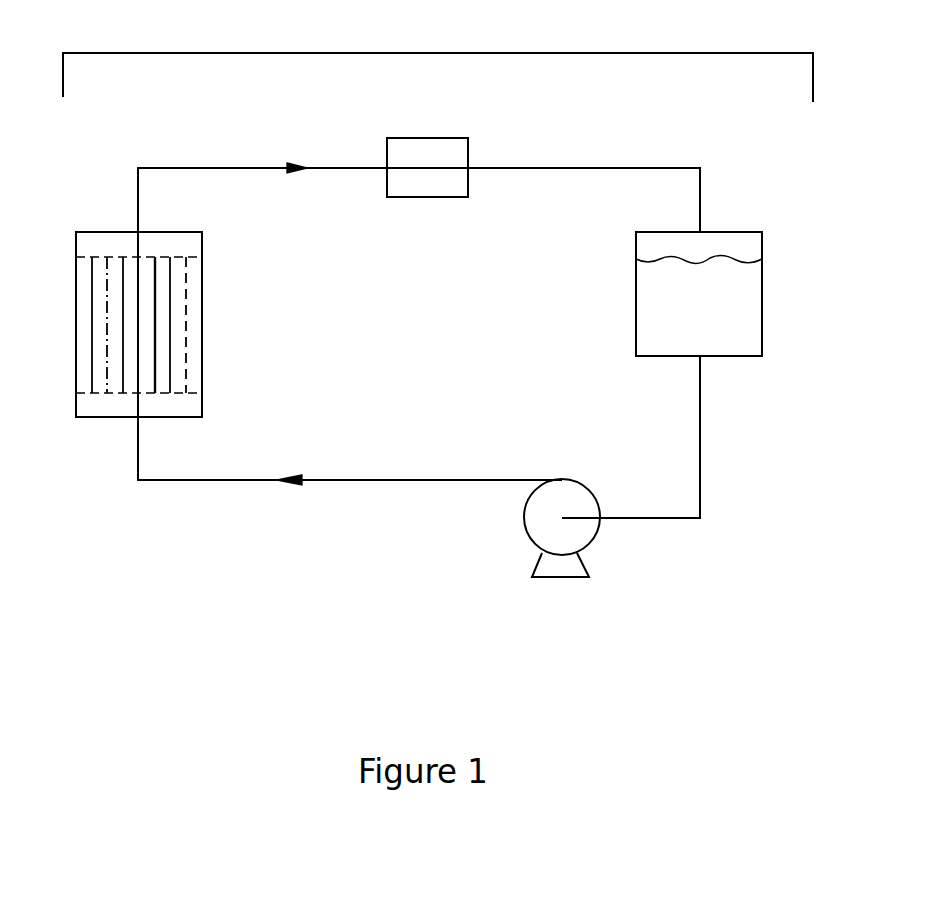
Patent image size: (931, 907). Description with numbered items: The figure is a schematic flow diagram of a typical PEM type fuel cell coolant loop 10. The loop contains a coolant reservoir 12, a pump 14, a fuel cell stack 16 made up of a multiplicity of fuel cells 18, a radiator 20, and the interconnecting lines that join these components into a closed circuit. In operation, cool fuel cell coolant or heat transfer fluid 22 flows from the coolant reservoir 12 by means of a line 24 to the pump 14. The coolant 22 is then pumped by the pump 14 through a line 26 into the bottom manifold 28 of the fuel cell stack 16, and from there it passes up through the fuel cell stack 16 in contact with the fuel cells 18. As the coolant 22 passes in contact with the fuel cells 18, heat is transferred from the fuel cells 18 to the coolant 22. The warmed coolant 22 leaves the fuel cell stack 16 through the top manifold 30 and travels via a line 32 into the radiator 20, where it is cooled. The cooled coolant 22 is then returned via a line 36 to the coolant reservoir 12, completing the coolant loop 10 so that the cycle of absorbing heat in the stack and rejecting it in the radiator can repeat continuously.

The fuel cell coolant loop 10 is at (438, 59).
The coolant reservoir 12 is at (762, 248).
The pump 14 is at (528, 534).
The fuel cell stack 16 is at (203, 289).
The fuel cells 18 is at (155, 393).
The radiator 20 is at (468, 153).
The coolant 22 is at (718, 312).
The line 24 is at (700, 423).
The line 26 is at (240, 480).
The bottom manifold 28 is at (92, 417).
The top manifold 30 is at (98, 232).
The line 32 is at (180, 168).
The line 36 is at (632, 168).